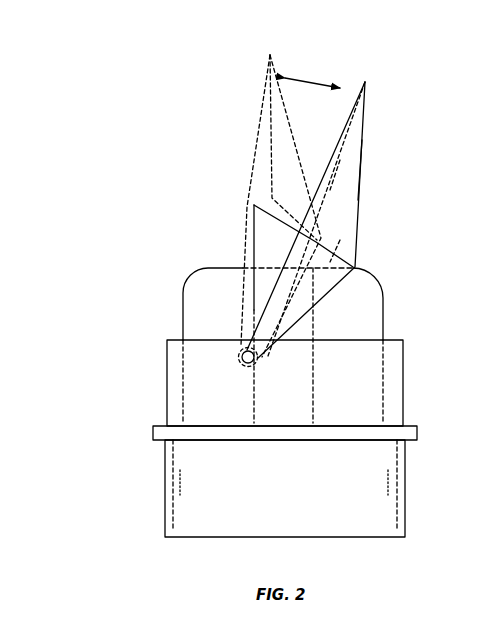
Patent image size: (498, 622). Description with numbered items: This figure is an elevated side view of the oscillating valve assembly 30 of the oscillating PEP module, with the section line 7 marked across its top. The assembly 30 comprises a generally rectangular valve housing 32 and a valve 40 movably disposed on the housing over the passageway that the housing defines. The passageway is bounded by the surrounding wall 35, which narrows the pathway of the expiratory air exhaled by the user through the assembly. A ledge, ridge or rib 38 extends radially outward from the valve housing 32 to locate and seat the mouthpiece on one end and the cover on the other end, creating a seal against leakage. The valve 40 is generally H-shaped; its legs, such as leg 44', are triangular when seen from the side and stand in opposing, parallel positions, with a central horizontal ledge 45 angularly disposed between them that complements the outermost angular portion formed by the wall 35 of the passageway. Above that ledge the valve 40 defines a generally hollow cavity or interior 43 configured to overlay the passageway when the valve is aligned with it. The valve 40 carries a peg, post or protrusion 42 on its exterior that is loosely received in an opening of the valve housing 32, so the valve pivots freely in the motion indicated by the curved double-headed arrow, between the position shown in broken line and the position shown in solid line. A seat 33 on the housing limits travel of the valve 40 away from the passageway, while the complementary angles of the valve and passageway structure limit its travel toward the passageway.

The section line 7- 7 is at (403, 41).
The oscillating valve assembly 30 is at (86, 195).
The valve housing 32 is at (161, 472).
The seat 33 is at (390, 297).
The wall 35 is at (266, 243).
The rib 38 is at (417, 432).
The valve 40 is at (355, 107).
The post 42 is at (241, 358).
The interior 43 is at (345, 200).
The leg 44' is at (382, 170).
The central horizontal ledge 45 is at (350, 252).